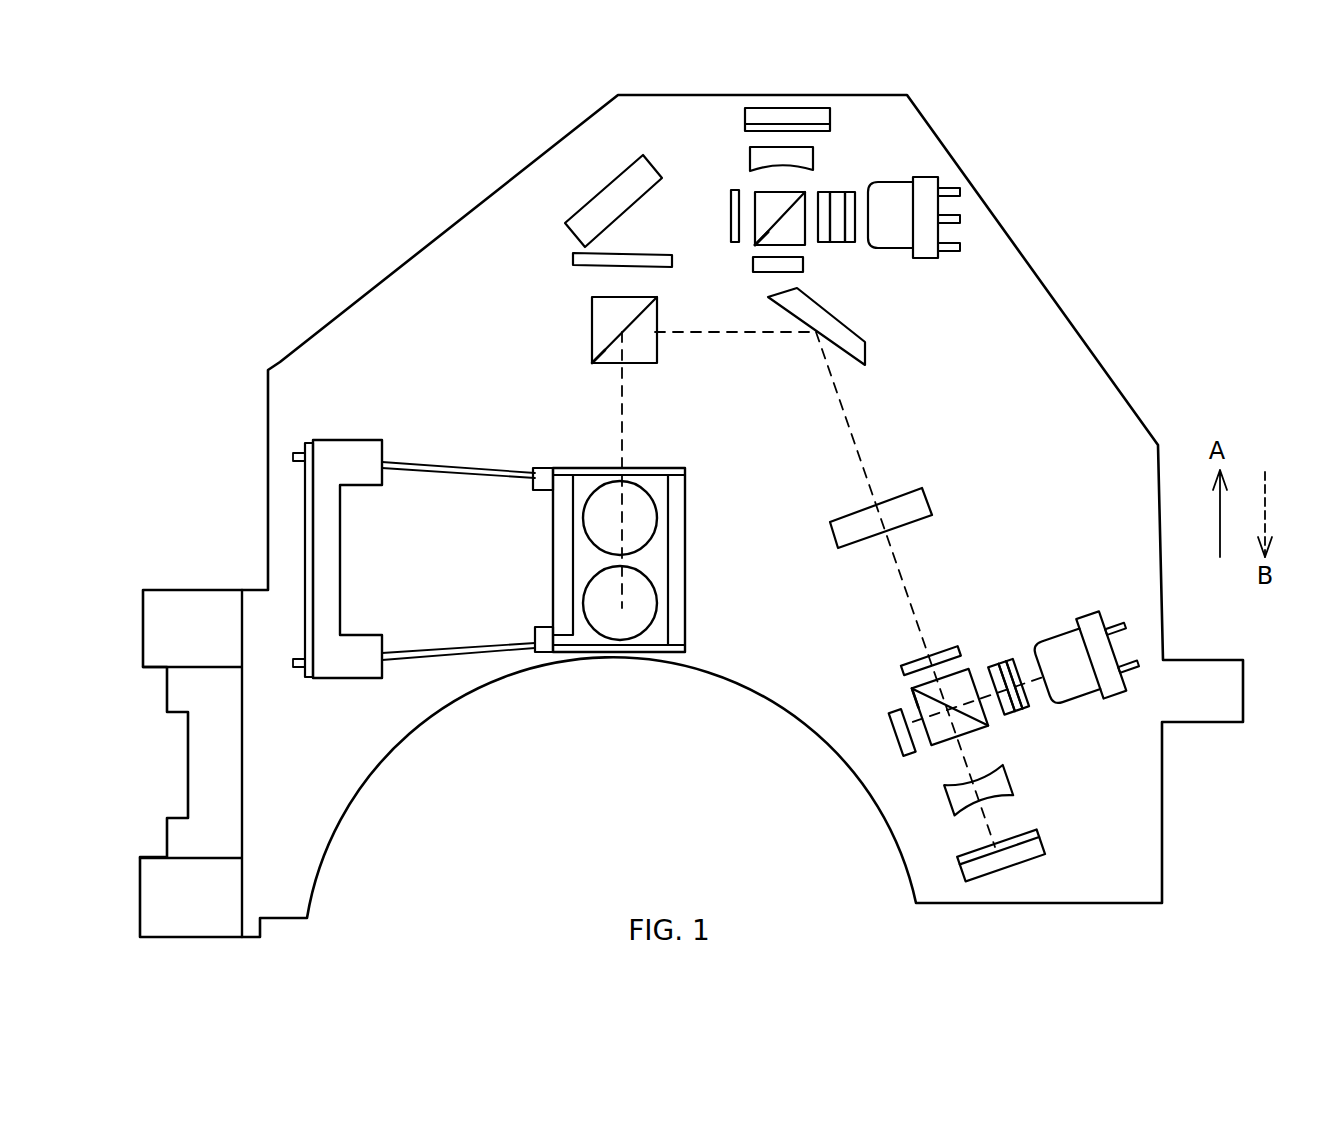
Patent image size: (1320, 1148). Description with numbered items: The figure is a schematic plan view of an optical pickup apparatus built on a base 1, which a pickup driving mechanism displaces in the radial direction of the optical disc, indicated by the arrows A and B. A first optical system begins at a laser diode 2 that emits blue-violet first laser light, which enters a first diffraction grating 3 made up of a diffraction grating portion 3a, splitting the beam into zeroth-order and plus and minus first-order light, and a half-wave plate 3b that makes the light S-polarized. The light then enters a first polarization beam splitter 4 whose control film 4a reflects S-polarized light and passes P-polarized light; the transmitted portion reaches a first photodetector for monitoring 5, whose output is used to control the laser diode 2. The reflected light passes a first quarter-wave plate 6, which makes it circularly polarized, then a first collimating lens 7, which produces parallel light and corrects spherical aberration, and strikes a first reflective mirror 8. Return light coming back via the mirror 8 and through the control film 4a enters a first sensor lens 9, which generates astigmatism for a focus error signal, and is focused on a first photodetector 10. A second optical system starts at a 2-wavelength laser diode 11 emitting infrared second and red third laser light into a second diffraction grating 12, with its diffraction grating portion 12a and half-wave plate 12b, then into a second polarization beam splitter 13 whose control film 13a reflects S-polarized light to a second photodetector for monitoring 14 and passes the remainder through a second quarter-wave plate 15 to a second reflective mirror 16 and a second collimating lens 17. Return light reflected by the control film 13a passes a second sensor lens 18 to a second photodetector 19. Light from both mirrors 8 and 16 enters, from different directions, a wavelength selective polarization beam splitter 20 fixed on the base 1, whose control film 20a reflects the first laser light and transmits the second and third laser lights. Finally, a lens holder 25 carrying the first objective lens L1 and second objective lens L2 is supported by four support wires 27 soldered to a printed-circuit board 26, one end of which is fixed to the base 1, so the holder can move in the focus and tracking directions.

The base 1 is at (1088, 375).
The laser diode 2 is at (1067, 640).
The first diffraction grating 3 is at (1007, 657).
The diffraction grating portion 3a is at (1027, 705).
The half-wave plate 3b is at (1016, 705).
The first polarization beam splitter 4 is at (933, 743).
The control film 4a is at (913, 693).
The first photodetector for monitoring 5 is at (897, 742).
The first quarter-wave plate 6 is at (958, 648).
The first collimating lens 7 is at (918, 500).
The first reflective mirror 8 is at (843, 338).
The first sensor lens 9 is at (1002, 790).
The first photodetector 10 is at (1033, 853).
The 2-wavelength laser diode 11 is at (927, 252).
The second diffraction grating 12 is at (837, 190).
The diffraction grating portion 12a is at (847, 233).
The half-wave plate 12b is at (835, 232).
The second polarization beam splitter 13 is at (760, 200).
The control film 13a is at (757, 243).
The second photodetector for monitoring 14 is at (772, 265).
The second quarter-wave plate 15 is at (730, 200).
The second reflective mirror 16 is at (637, 170).
The second collimating lens 17 is at (575, 258).
The second sensor lens 18 is at (803, 158).
The second photodetector 19 is at (785, 115).
The wavelength selective polarization beam splitter 20 is at (655, 360).
The control film 20a is at (604, 347).
The lens holder 25 is at (584, 635).
The printed-circuit board 26 is at (308, 587).
The support wires 27 is at (442, 473).
The first objective lens L1 is at (643, 517).
The second objective lens L2 is at (640, 602).